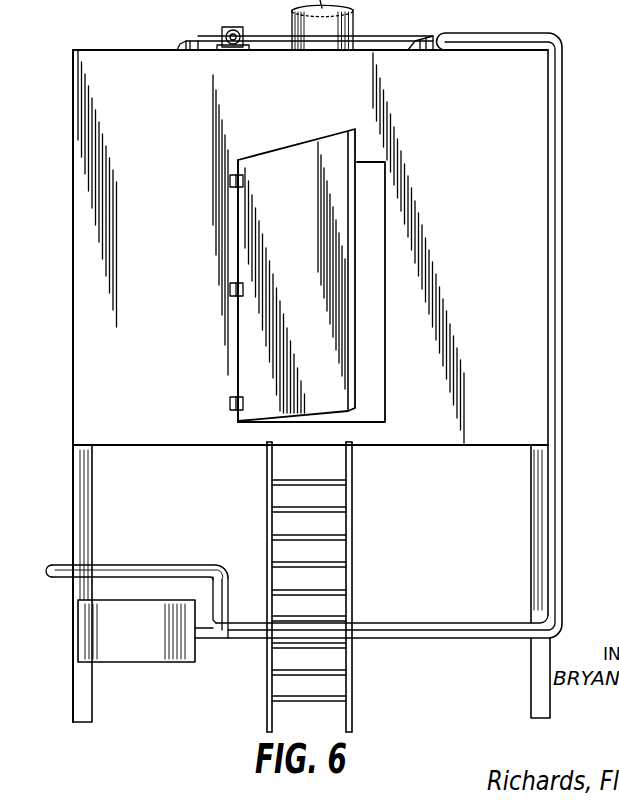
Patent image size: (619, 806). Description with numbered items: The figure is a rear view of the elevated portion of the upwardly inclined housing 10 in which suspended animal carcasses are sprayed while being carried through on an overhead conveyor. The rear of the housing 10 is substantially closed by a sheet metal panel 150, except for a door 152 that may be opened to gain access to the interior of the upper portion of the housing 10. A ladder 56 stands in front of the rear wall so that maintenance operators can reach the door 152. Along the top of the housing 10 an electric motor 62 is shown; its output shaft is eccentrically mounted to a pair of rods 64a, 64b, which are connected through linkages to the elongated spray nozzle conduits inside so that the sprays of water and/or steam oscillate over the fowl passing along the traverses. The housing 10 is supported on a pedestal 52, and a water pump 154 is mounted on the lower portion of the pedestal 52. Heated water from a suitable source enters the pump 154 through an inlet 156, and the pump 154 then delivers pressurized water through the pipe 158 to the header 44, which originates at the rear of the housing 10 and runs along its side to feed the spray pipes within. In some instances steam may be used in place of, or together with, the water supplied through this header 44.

The housing 10 is at (55, 165).
The header 44 is at (567, 258).
The pedestal 52 is at (90, 503).
The ladder 56 is at (352, 521).
The electric motor 62 is at (240, 32).
The rod 64a is at (210, 36).
The rod 64b is at (395, 36).
The sheet metal panel 150 is at (339, 117).
The door 152 is at (311, 291).
The water pump 154 is at (148, 641).
The inlet 156 is at (215, 563).
The pipe 158 is at (473, 622).